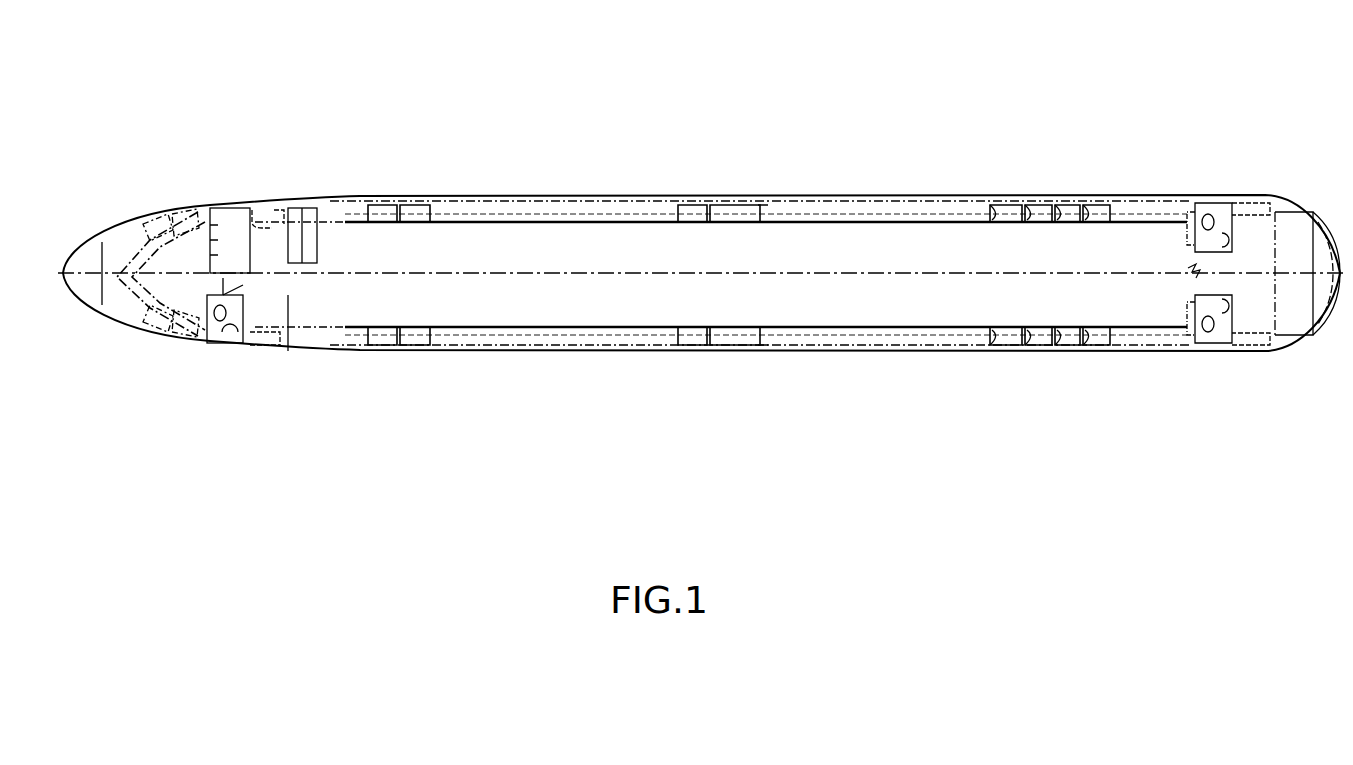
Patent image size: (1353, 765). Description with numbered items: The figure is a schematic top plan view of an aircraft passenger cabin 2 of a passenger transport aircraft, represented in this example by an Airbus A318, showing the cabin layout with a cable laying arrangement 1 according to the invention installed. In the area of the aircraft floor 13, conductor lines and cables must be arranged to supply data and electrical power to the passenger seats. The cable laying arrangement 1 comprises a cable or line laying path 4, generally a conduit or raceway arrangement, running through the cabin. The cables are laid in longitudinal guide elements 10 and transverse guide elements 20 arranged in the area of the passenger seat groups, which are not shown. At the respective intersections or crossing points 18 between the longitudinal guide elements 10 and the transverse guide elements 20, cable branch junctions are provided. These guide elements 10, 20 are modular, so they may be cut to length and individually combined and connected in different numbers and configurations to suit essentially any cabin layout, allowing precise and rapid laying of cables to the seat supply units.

The cable laying arrangement 1 is at (436, 160).
The aircraft passenger cabin 2 is at (265, 247).
The cable or line laying path 4 is at (932, 200).
The longitudinal guide elements 10 is at (540, 196).
The aircraft floor 13 is at (314, 296).
The intersections or crossing points 18 is at (770, 214).
The transverse guide elements 20 is at (1097, 200).